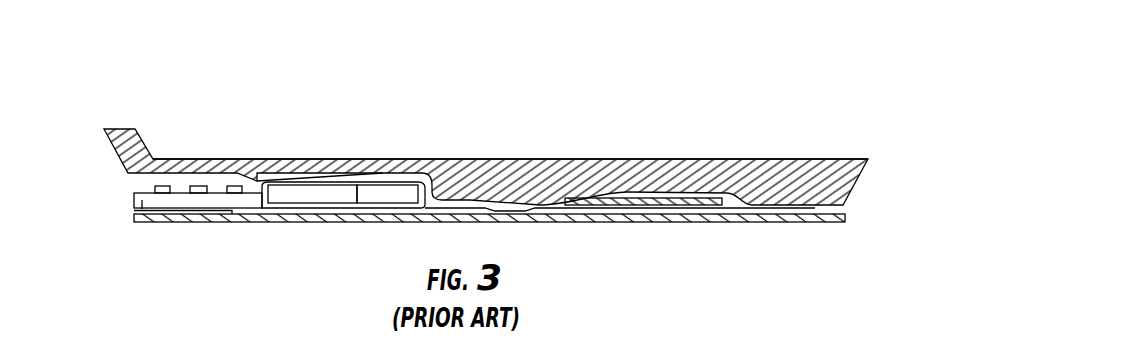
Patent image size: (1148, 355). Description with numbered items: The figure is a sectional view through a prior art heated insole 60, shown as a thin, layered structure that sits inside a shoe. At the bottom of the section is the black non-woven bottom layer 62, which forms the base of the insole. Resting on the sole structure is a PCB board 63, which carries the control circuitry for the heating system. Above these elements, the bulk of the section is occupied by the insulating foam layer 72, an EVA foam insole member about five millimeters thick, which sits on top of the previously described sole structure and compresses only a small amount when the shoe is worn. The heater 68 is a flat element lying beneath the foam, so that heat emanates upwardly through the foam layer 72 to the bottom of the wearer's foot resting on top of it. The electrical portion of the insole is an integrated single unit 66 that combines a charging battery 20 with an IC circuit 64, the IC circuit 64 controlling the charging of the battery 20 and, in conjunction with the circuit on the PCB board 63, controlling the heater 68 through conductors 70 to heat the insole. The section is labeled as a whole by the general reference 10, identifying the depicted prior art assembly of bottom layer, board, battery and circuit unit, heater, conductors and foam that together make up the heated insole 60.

The housing 10 is at (440, 160).
The charging battery 20 is at (367, 195).
The prior art insole 60 is at (853, 147).
The black non-woven bottom layer 62 is at (760, 222).
The PCB board 63 is at (140, 211).
The IC circuit 64 is at (307, 193).
The integrated single unit 66 is at (378, 203).
The heater 68 is at (660, 202).
The conductors 70 is at (539, 210).
The insulating foam layer 72 is at (543, 160).